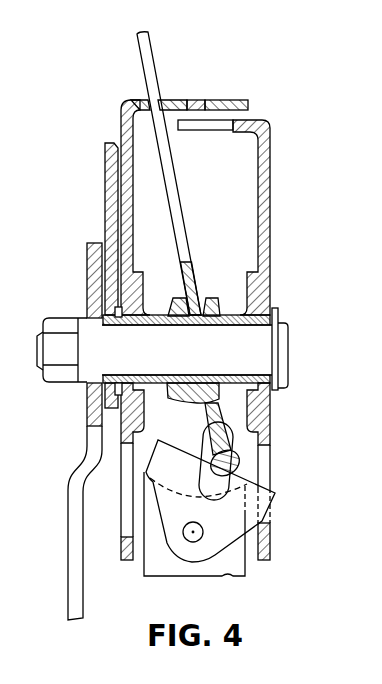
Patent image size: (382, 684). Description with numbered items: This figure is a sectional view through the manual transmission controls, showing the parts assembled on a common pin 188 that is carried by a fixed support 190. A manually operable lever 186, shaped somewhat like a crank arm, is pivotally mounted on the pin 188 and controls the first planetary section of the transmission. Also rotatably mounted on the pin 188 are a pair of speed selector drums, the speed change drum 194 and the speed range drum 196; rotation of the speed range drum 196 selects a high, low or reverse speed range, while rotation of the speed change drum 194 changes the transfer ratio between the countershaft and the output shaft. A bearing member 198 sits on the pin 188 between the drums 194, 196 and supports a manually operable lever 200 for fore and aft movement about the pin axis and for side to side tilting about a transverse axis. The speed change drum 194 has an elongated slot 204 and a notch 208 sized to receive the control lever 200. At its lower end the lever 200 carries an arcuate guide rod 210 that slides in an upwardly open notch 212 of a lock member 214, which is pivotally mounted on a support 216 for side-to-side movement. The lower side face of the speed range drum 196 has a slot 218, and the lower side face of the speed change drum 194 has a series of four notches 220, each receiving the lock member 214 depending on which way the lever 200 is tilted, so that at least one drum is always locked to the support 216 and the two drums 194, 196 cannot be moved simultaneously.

The manually operable lever 186 is at (107, 192).
The pin 188 is at (263, 335).
The fixed support 190 is at (83, 453).
The speed change drum 194 is at (243, 100).
The speed range drum 196 is at (267, 177).
The bearing member 198 is at (213, 305).
The manually operable lever 200 is at (149, 39).
The elongated slot 204 is at (203, 98).
The notch 208 is at (170, 100).
The arcuate guide rod 210 is at (238, 462).
The upwardly open notch 212 is at (205, 478).
The lock member 214 is at (168, 446).
The support 216 is at (231, 566).
The slot 218 is at (266, 530).
The notches 220 is at (125, 542).